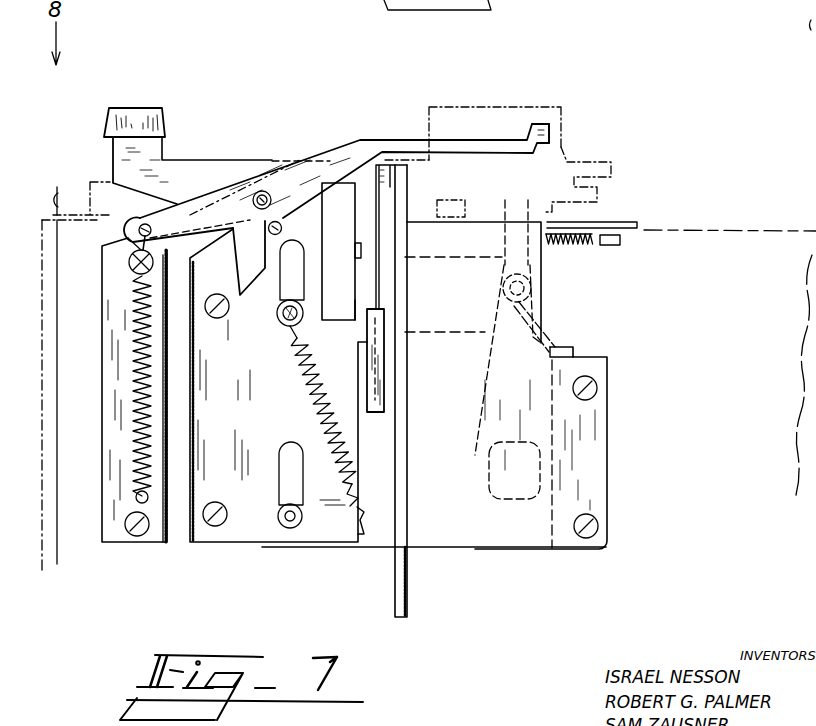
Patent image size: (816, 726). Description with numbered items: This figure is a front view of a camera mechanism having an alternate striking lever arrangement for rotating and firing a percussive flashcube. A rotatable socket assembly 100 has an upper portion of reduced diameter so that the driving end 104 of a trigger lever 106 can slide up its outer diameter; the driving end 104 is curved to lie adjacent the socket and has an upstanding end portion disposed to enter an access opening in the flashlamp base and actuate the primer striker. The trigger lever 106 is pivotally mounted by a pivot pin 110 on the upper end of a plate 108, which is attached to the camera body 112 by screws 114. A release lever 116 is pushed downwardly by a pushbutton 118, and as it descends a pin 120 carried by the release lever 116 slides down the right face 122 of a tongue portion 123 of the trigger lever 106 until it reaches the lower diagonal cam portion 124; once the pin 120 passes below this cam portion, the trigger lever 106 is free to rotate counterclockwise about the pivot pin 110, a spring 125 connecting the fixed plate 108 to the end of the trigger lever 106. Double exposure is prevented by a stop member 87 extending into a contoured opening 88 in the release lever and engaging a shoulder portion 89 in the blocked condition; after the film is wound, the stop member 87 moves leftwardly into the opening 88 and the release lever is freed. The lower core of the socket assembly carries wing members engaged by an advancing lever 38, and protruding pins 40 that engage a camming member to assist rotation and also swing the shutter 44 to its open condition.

The advancing lever 38 is at (382, 342).
The pins 40 is at (597, 211).
The shutter 44 is at (544, 452).
The stop member 87 is at (355, 250).
The contoured opening 88 is at (345, 320).
The shoulder portion 89 is at (352, 242).
The socket assembly 100 is at (564, 147).
The driving end 104 is at (538, 110).
The trigger lever 106 is at (325, 157).
The plate 108 is at (108, 378).
The pivot pin 110 is at (259, 191).
The camera body 112 is at (55, 546).
The screws 114 is at (138, 535).
The release lever 116 is at (327, 527).
The pushbutton 118 is at (217, 135).
The pin 120 is at (282, 221).
The right face 122 is at (285, 326).
The tongue portion 123 is at (150, 287).
The diagonal cam portion 124 is at (258, 300).
The spring 125 is at (143, 458).